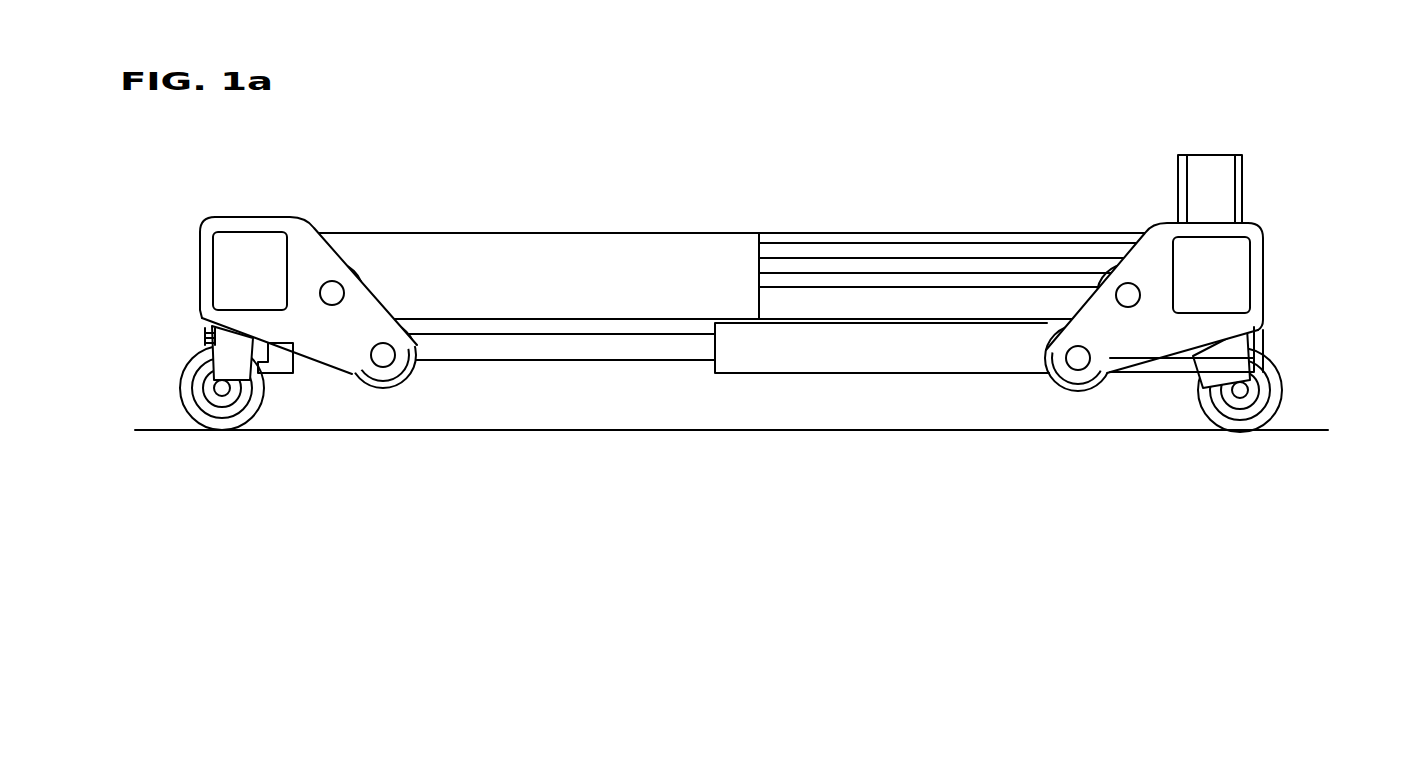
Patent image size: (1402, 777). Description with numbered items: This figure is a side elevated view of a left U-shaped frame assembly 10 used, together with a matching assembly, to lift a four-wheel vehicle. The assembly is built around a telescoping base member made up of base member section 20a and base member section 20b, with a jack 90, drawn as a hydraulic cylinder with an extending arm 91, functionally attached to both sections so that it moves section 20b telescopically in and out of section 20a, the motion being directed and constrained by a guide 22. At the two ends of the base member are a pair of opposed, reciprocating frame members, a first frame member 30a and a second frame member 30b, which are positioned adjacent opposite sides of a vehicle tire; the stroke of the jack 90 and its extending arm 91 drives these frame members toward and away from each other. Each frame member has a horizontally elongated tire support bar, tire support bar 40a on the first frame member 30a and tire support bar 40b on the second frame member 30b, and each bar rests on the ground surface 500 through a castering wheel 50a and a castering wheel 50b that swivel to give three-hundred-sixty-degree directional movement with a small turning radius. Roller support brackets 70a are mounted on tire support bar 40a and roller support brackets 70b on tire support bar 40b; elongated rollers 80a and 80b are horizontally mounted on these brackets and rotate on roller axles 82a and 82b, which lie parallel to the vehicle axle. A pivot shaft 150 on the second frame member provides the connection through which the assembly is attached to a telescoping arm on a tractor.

The U-shaped frame assembly 10 is at (880, 136).
The base member section 20a is at (476, 233).
The base member section 20b is at (867, 233).
The guide 22 is at (775, 272).
The first frame member 30a is at (207, 210).
The second frame member 30b is at (1296, 288).
The tire support bar 40a is at (226, 293).
The tire support bar 40b is at (1234, 268).
The castering wheel 50a is at (243, 422).
The castering wheel 50b is at (1267, 426).
The roller support bracket 70a is at (325, 348).
The roller support bracket 70b is at (1145, 347).
The elongated roller 80a is at (357, 268).
The elongated roller 80b is at (1106, 276).
The roller axle 82a is at (327, 282).
The roller axle 82b is at (1130, 284).
The jack 90 is at (732, 373).
The extending arm 91 is at (572, 360).
The pivot shaft 150 is at (1243, 160).
The ground surface 500 is at (168, 431).